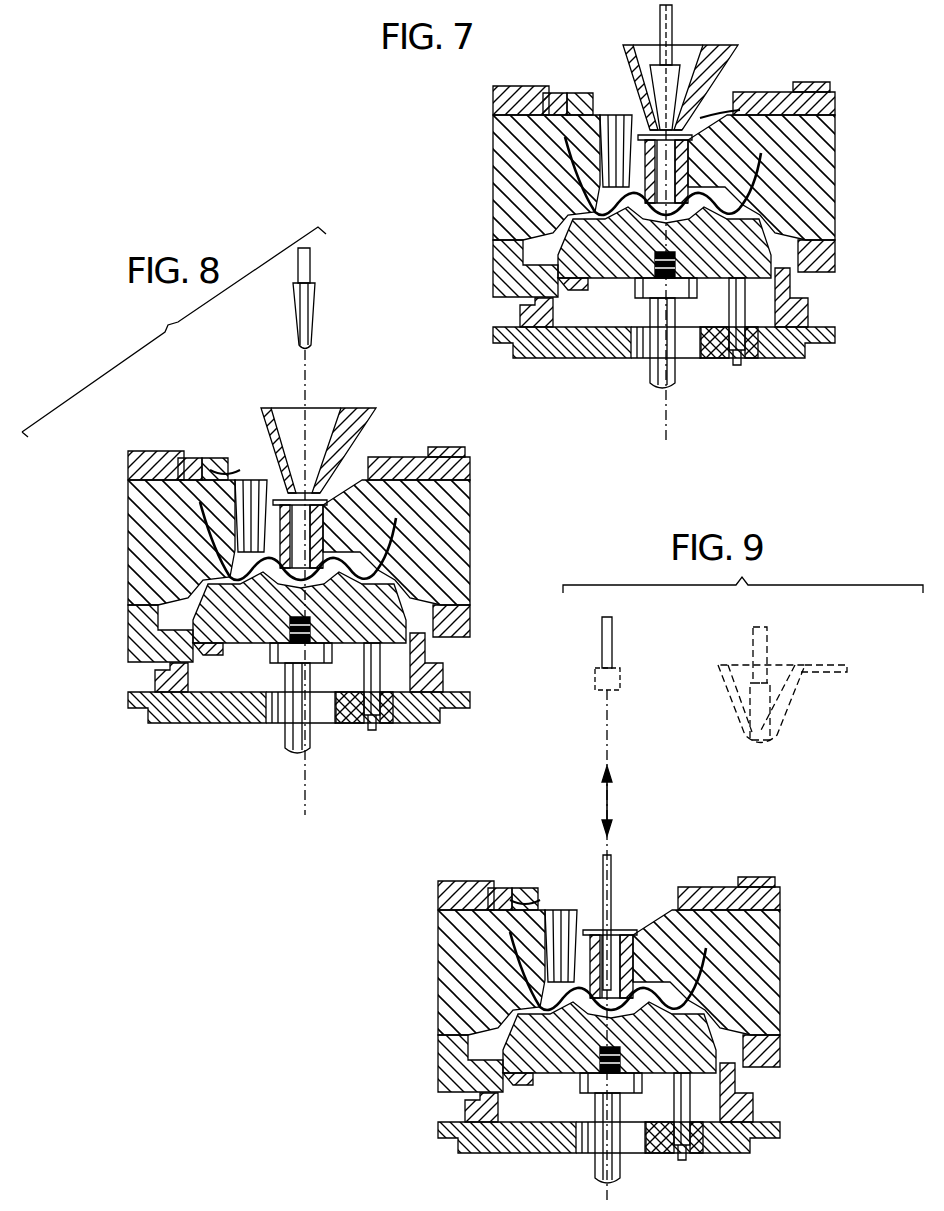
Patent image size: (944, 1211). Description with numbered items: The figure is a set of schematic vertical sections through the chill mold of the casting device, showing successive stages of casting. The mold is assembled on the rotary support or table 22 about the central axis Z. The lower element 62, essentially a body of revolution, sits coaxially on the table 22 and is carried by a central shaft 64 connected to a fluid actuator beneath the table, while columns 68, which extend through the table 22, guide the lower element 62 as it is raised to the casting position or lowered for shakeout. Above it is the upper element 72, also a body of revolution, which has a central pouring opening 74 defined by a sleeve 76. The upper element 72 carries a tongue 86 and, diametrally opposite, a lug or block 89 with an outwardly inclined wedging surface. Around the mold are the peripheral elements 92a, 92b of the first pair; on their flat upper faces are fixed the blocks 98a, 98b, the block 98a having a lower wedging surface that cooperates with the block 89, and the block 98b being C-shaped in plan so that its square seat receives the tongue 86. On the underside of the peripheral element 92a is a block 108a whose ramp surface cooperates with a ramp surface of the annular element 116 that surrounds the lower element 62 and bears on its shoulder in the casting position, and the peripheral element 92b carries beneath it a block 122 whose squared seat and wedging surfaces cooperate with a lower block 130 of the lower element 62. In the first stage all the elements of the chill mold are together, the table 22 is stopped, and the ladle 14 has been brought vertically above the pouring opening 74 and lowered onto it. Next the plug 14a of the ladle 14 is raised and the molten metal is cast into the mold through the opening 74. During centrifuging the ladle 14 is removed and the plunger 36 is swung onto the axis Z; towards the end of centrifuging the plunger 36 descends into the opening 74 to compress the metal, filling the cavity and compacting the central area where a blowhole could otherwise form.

In FIG. 7, the casting bucket or ladle 14 is at (712, 70).
In FIG. 8, the casting bucket or ladle 14 is at (262, 430).
In FIG. 9, the casting bucket or ladle 14 is at (740, 705).
In FIG. 7, the plug 14a is at (652, 58).
In FIG. 8, the plug 14a is at (315, 300).
In FIG. 9, the plug 14a is at (752, 690).
In FIG. 7, the rotary support or table 22 is at (582, 345).
In FIG. 8, the rotary support or table 22 is at (185, 712).
In FIG. 9, the rotary support or table 22 is at (490, 1130).
In FIG. 9, the plunger 36 is at (603, 672).
In FIG. 7, the lower element 62 is at (610, 283).
In FIG. 8, the lower element 62 is at (245, 640).
In FIG. 9, the lower element 62 is at (562, 1060).
In FIG. 7, the central shaft 64 is at (655, 398).
In FIG. 8, the central shaft 64 is at (295, 752).
In FIG. 9, the central shaft 64 is at (605, 1155).
In FIG. 7, the columns 68 is at (735, 370).
In FIG. 8, the columns 68 is at (372, 720).
In FIG. 9, the columns 68 is at (692, 1112).
In FIG. 7, the upper element 72 is at (740, 108).
In FIG. 8, the upper element 72 is at (225, 470).
In FIG. 9, the upper element 72 is at (517, 890).
In FIG. 7, the central pouring opening 74 is at (632, 145).
In FIG. 8, the central pouring opening 74 is at (340, 520).
In FIG. 9, the central pouring opening 74 is at (570, 920).
In FIG. 7, the sleeve 76 is at (684, 147).
In FIG. 8, the sleeve 76 is at (318, 525).
In FIG. 9, the sleeve 76 is at (625, 930).
In FIG. 7, the tongue 86 is at (560, 102).
In FIG. 8, the tongue 86 is at (232, 470).
In FIG. 9, the tongue 86 is at (502, 893).
In FIG. 7, the lug or block 89 is at (785, 96).
In FIG. 8, the lug or block 89 is at (470, 500).
In FIG. 9, the lug or block 89 is at (715, 880).
In FIG. 7, the peripheral element 92a is at (818, 85).
In FIG. 8, the peripheral element 92a is at (455, 510).
In FIG. 9, the peripheral element 92a is at (750, 950).
In FIG. 7, the peripheral element 92b is at (510, 182).
In FIG. 8, the peripheral element 92b is at (148, 490).
In FIG. 9, the peripheral element 92b is at (462, 988).
In FIG. 7, the block 98a is at (745, 128).
In FIG. 8, the block 98a is at (432, 450).
In FIG. 9, the block 98a is at (790, 860).
In FIG. 7, the block 98b is at (510, 98).
In FIG. 8, the block 98b is at (170, 445).
In FIG. 9, the block 98b is at (440, 893).
In FIG. 7, the block 108a is at (822, 342).
In FIG. 8, the block 108a is at (478, 625).
In FIG. 9, the block 108a is at (772, 1052).
In FIG. 7, the annular element 116 is at (795, 355).
In FIG. 8, the annular element 116 is at (438, 690).
In FIG. 9, the annular element 116 is at (762, 1112).
In FIG. 7, the block 122 is at (500, 248).
In FIG. 8, the block 122 is at (145, 645).
In FIG. 9, the block 122 is at (445, 1065).
In FIG. 7, the lower block 130 is at (520, 305).
In FIG. 8, the lower block 130 is at (215, 680).
In FIG. 9, the lower block 130 is at (520, 1110).
In FIG. 7, the central axis Z is at (667, 423).
In FIG. 8, the central axis Z is at (306, 405).
In FIG. 9, the central axis Z is at (600, 740).